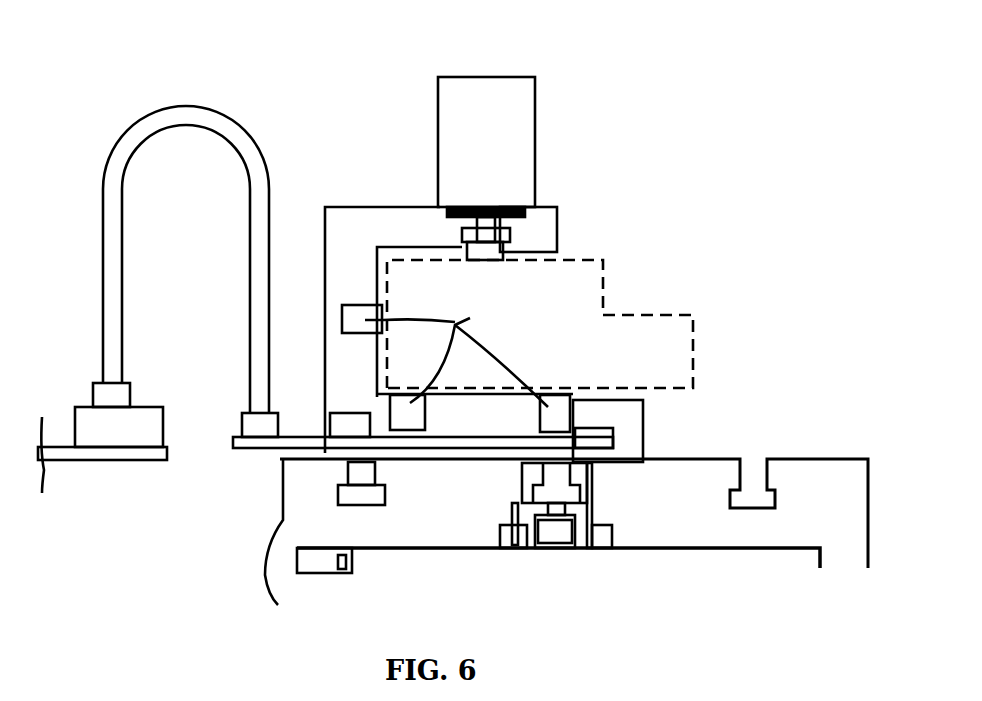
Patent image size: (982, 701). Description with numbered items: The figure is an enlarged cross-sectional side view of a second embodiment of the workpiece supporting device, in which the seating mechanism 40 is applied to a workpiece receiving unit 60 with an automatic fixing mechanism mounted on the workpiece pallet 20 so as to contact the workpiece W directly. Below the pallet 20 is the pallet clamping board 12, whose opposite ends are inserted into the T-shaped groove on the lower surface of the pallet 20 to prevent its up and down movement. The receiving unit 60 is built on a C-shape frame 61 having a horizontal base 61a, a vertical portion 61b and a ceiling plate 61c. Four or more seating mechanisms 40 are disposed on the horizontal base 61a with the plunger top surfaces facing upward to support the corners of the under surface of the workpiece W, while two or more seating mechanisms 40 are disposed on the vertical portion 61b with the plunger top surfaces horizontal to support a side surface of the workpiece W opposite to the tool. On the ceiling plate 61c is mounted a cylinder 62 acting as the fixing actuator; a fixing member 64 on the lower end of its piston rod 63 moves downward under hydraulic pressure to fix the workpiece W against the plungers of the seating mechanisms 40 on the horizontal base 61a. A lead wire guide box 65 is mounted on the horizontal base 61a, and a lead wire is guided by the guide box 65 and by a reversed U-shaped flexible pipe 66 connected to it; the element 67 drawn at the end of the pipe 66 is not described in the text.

The pallet clamping board 12 is at (410, 563).
The workpiece pallet 20 is at (795, 467).
The seating mechanism 40 is at (467, 364).
The workpiece receiving unit 60 is at (322, 178).
The C-shape frame 61 is at (385, 230).
The horizontal base 61a is at (627, 425).
The vertical portion 61b is at (340, 272).
The ceiling plate 61c is at (552, 240).
The cylinder 62 is at (488, 107).
The piston rod 63 is at (487, 217).
The fixing member 64 is at (480, 252).
The lead wire guide box 65 is at (280, 440).
The flexible pipe 66 is at (130, 148).
The connector block 67 is at (122, 433).
The workpiece W is at (617, 303).